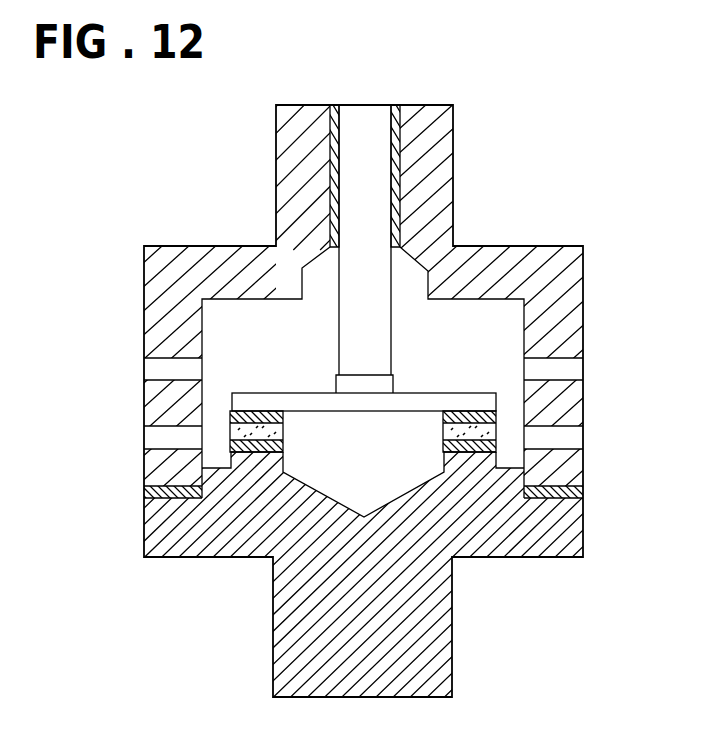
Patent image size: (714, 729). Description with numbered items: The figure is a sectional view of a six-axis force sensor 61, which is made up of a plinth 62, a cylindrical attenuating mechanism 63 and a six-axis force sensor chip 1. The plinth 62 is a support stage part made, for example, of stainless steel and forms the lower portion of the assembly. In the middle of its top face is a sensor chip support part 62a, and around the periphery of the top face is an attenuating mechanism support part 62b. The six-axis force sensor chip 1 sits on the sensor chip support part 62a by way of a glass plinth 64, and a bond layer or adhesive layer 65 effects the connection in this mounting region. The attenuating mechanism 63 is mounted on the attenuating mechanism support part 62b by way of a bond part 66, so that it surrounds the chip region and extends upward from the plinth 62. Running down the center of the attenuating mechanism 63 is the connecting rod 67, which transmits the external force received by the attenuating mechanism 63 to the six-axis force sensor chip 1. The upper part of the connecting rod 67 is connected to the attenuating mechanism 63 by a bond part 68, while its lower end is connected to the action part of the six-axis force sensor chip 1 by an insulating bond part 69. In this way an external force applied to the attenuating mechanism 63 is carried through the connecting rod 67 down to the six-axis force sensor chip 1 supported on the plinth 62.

The six-axis force sensor chip 1 is at (428, 392).
The six-axis force sensor 61 is at (566, 143).
The plinth 62 is at (452, 618).
The sensor chip support part 62a is at (285, 462).
The attenuating mechanism support part 62b is at (575, 525).
The cylindrical attenuating mechanism 63 is at (575, 282).
The glass plinth 64 is at (283, 432).
The bond layer or adhesive layer 65 is at (506, 445).
The bond part 66 is at (583, 493).
The connecting rod 67 is at (351, 327).
The bond part 68 is at (396, 109).
The insulating bond part 69 is at (341, 384).